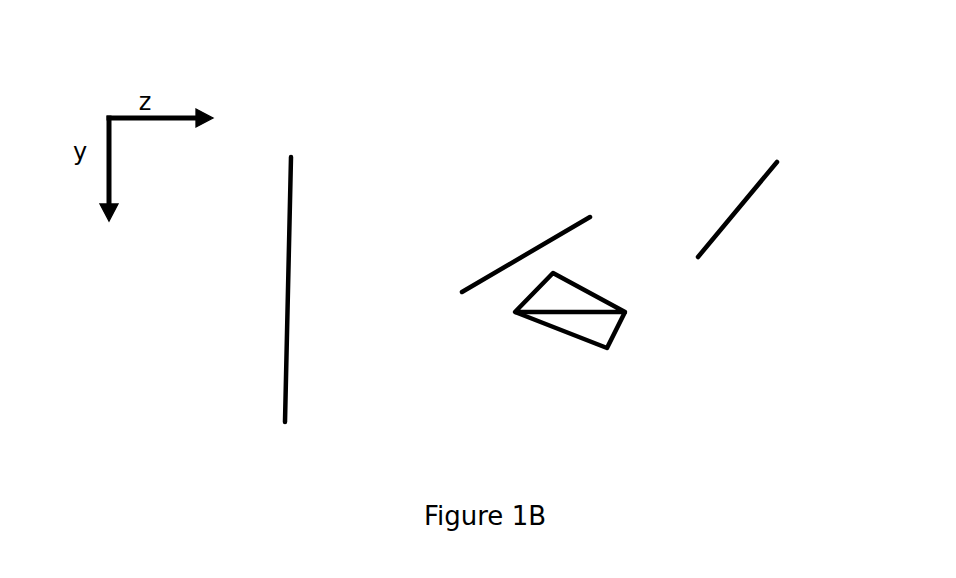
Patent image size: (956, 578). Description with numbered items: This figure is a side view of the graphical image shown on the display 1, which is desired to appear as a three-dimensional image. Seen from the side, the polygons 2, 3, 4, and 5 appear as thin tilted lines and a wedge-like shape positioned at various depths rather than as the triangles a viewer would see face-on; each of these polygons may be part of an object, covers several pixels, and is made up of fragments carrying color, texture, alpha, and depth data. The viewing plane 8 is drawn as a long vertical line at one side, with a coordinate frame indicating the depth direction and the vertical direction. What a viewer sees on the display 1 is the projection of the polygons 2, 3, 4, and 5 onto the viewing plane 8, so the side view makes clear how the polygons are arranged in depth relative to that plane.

The display 1 is at (484, 78).
The polygon 2 is at (570, 282).
The polygon 3 is at (553, 232).
The polygon 4 is at (607, 348).
The polygon 5 is at (753, 190).
The viewing plane 8 is at (291, 196).